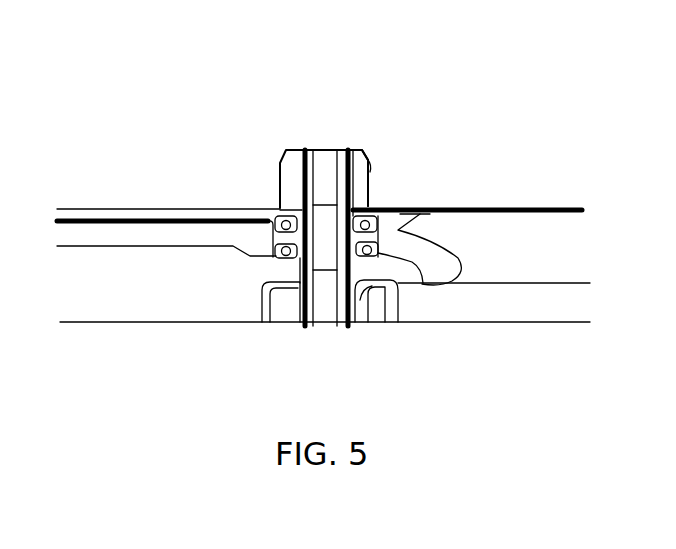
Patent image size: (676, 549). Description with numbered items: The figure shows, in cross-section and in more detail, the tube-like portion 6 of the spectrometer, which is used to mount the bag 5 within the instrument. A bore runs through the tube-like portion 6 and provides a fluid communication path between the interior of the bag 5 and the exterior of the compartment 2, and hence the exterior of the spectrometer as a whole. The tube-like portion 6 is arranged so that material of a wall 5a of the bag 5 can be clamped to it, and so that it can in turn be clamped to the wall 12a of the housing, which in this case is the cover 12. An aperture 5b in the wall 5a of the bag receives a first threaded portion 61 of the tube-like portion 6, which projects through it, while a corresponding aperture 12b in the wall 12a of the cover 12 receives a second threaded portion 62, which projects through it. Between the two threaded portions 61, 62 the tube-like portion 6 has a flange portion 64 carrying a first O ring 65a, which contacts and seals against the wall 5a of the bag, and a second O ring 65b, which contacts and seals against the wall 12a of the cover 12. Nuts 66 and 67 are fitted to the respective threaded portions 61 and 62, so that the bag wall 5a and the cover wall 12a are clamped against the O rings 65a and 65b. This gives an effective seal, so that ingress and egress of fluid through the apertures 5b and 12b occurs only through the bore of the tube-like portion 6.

The compartment 2 is at (547, 259).
The bag 5 is at (80, 214).
The wall of the bag 5a is at (138, 218).
The aperture in the bag wall 5b is at (363, 207).
The tube-like portion 6 is at (343, 140).
The cover 12 is at (90, 298).
The wall of the cover 12a is at (188, 288).
The aperture in the cover wall 12b is at (382, 313).
The first threaded portion 61 is at (310, 150).
The second threaded portion 62 is at (309, 328).
The flange portion 64 is at (425, 207).
The first O ring 65a is at (395, 211).
The second O ring 65b is at (398, 262).
The first nut 66 is at (370, 176).
The second nut 67 is at (383, 317).